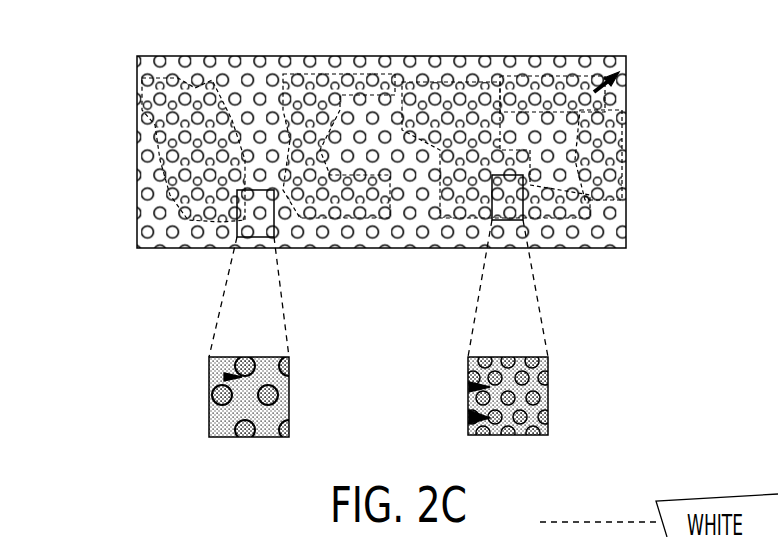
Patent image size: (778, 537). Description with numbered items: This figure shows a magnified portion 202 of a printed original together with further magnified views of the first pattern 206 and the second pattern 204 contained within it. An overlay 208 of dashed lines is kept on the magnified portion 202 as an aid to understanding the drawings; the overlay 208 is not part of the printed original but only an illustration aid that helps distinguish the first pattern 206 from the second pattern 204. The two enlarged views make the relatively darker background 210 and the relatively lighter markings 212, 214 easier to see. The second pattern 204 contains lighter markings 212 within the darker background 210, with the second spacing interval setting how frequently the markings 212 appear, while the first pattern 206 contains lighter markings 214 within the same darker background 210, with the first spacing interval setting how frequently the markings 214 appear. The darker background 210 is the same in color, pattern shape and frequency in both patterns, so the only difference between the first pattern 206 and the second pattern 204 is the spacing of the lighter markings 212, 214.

The magnified portion 202 is at (137, 177).
The second pattern 204 is at (262, 236).
The first pattern 206 is at (507, 224).
The overlay 208 is at (627, 68).
The relatively darker background 210 is at (226, 376).
The relatively lighter markings 212 is at (222, 433).
The relatively lighter markings 214 is at (470, 418).